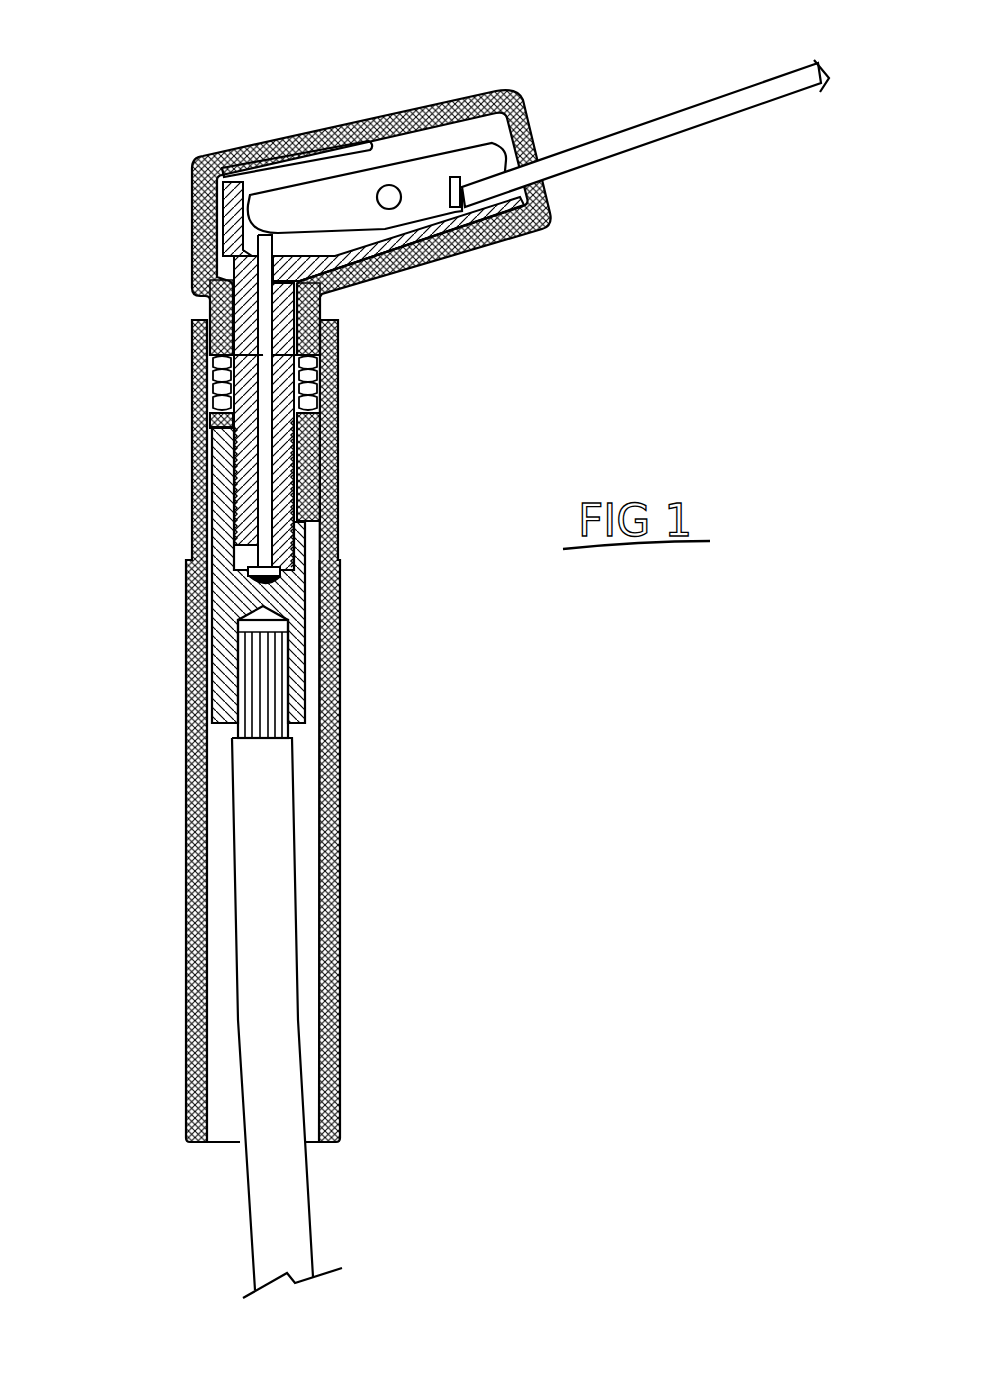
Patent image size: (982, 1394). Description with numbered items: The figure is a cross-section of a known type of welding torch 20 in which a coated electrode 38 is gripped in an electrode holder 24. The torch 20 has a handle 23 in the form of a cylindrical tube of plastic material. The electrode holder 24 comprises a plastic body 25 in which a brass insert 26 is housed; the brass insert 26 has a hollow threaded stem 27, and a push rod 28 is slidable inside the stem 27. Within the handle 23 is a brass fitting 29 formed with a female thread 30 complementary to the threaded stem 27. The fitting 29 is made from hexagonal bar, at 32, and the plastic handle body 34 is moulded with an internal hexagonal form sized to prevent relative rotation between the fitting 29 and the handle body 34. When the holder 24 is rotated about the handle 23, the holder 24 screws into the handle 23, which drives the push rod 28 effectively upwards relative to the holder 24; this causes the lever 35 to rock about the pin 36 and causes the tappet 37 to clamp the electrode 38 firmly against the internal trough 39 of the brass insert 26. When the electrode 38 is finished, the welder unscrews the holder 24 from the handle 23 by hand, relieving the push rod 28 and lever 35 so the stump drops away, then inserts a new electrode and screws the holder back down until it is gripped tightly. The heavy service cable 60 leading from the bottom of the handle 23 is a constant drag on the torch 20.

The torch 20 is at (503, 707).
The handle 23 is at (322, 817).
The electrode holder 24 is at (529, 97).
The plastic body 25 is at (463, 250).
The brass insert 26 is at (230, 228).
The threaded stem 27 is at (247, 475).
The push rod 28 is at (210, 303).
The brass fitting 29 is at (233, 597).
The female thread 30 is at (243, 555).
The hexagonal bar 32 is at (303, 603).
The plastic handle body 34 is at (200, 790).
The lever 35 is at (308, 200).
The pin 36 is at (389, 185).
The tappet 37 is at (460, 158).
The electrode 38 is at (693, 132).
The internal trough 39 is at (467, 133).
The service cable 60 is at (287, 1210).